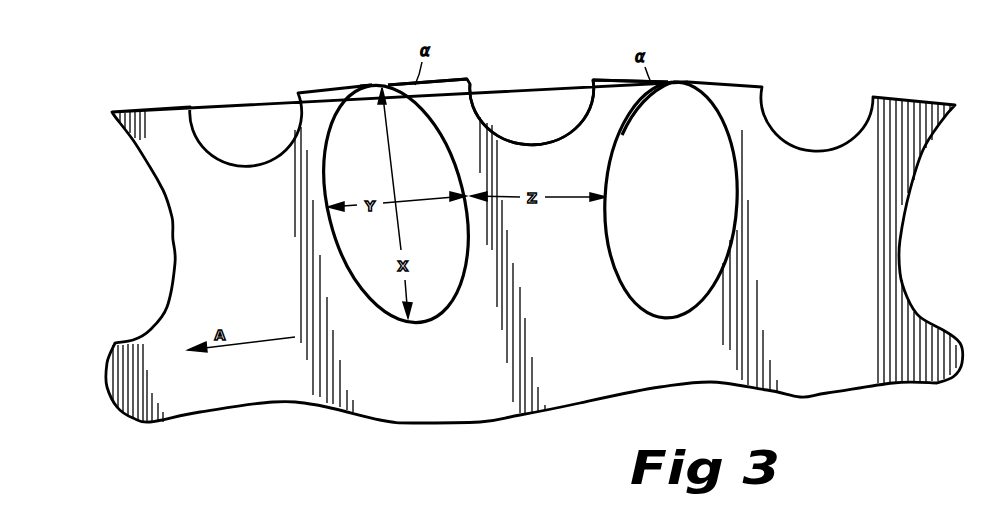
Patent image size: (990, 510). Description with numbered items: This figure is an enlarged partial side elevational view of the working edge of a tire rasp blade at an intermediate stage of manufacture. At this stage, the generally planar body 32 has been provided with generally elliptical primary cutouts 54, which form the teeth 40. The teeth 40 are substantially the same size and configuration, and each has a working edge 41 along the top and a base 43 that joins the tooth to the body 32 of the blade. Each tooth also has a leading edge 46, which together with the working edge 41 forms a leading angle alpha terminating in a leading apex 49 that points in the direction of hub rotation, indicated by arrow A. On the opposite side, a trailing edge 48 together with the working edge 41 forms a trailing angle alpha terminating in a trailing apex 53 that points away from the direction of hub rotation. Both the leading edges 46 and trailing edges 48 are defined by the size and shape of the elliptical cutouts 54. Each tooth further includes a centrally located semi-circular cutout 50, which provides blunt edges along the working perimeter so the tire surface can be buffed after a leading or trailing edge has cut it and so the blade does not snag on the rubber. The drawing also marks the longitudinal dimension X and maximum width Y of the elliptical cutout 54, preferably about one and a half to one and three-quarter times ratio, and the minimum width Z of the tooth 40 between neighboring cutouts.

The body 32 is at (481, 404).
The teeth 40 is at (233, 244).
The working edge 41 is at (452, 78).
The base 43 is at (590, 287).
The leading edge 46 is at (425, 110).
The trailing edge 48 is at (660, 88).
The leading apex 49 is at (387, 85).
The cutout 50 is at (558, 127).
The trailing apex 53 is at (675, 77).
The elliptical primary cutouts 54 is at (684, 209).